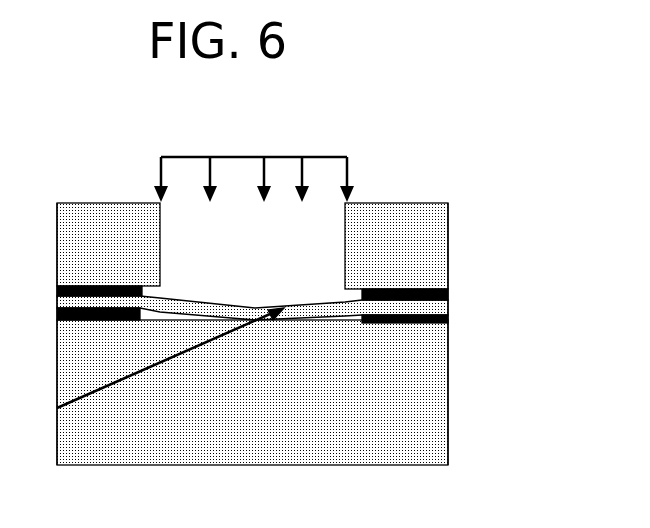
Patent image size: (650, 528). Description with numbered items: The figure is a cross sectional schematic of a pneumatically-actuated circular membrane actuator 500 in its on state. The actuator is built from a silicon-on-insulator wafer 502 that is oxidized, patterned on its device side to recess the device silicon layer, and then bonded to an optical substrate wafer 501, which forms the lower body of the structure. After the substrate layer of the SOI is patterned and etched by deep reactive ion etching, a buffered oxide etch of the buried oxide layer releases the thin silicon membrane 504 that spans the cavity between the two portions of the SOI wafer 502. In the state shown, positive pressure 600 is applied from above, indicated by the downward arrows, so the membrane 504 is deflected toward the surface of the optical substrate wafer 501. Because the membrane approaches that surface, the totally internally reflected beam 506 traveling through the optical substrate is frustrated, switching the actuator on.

The pneumatically-actuated circular membrane actuator 500 is at (470, 108).
The optical substrate wafer 501 is at (447, 395).
The silicon-on-insulator (SOI) wafer 502 is at (435, 260).
The silicon membrane 504 is at (210, 308).
The totally internally reflected beam 506 is at (158, 365).
The positive pressure 600 is at (283, 157).